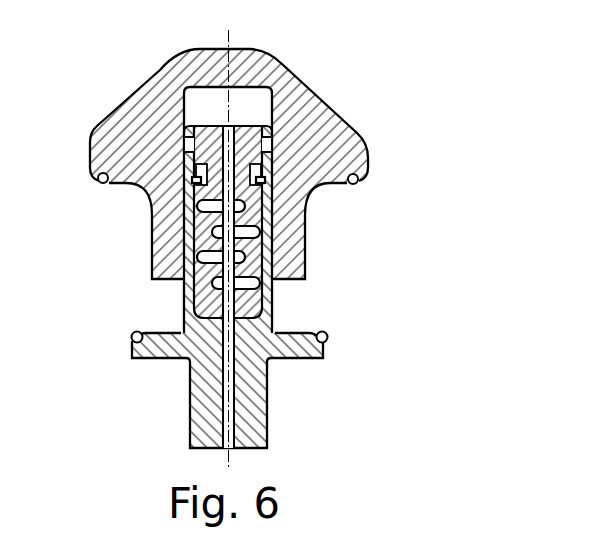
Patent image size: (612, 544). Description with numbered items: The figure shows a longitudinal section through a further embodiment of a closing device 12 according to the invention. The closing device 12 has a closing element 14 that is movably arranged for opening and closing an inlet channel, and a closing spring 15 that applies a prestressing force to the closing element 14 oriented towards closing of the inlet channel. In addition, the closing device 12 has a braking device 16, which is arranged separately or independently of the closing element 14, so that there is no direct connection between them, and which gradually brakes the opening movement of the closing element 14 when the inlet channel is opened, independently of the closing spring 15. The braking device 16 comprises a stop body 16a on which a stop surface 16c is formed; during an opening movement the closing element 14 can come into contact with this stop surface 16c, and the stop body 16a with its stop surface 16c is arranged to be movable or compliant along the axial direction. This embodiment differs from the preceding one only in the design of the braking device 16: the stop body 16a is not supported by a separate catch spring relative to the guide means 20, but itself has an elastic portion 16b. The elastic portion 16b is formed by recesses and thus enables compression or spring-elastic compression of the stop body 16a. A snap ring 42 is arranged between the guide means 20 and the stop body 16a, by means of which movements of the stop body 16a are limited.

The closing device 12 is at (275, 237).
The closing element 14 is at (138, 125).
The closing spring 15 is at (358, 182).
The braking device 16 is at (203, 101).
The stop body 16a is at (258, 133).
The elastic portion 16b is at (258, 263).
The stop surface 16c is at (242, 117).
The guide means 20 is at (190, 297).
The snap ring 42 is at (270, 182).